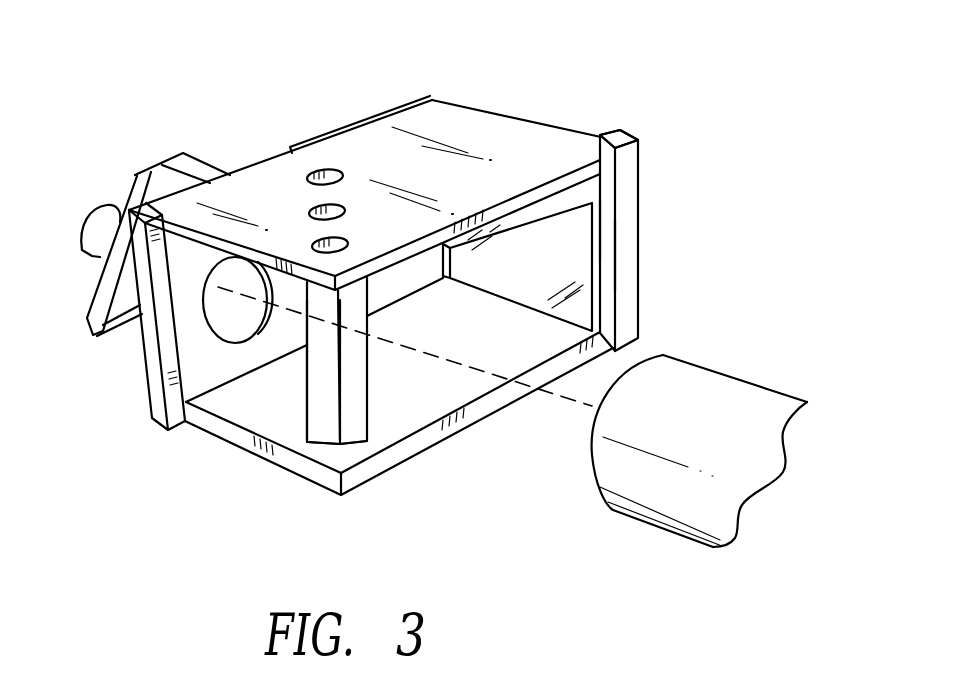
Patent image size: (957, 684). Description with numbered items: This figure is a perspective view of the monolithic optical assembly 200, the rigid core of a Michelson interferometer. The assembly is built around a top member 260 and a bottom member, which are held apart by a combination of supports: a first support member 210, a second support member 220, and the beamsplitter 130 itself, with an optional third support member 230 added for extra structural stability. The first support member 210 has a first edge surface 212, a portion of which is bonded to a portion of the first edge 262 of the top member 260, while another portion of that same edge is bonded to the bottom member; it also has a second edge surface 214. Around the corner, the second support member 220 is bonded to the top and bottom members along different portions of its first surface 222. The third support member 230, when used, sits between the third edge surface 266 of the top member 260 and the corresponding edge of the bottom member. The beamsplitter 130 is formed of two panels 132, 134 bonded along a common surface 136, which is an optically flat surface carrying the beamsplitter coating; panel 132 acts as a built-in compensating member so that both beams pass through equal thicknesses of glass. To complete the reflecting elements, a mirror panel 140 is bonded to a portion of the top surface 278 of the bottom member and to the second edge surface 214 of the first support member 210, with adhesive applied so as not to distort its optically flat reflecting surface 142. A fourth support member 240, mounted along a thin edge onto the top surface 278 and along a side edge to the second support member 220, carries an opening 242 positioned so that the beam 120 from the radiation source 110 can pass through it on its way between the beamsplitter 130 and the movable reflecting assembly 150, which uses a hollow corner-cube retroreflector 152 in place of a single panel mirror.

The radiation source 110 is at (770, 390).
The beam 120 is at (560, 396).
The beamsplitter 130 is at (352, 420).
The panel 132 is at (353, 403).
The panel 134 is at (321, 423).
The common surface 136 is at (335, 431).
The mirror panel 140 is at (602, 230).
The reflecting surface 142 is at (561, 273).
The movable reflecting assembly 150 is at (187, 149).
The hollow corner-cube retroreflector 152 is at (147, 177).
The monolithic optical assembly 200 is at (436, 96).
The first support member 210 is at (640, 187).
The first edge surface 212 is at (608, 253).
The second edge surface 214 is at (602, 128).
The second support member 220 is at (336, 127).
The first surface 222 is at (398, 279).
The third support member 230 is at (150, 368).
The fourth support member 240 is at (212, 392).
The opening 242 is at (226, 320).
The top member 260 is at (470, 131).
The first edge 262 is at (516, 115).
The third edge surface 266 is at (191, 234).
The top surface 278 is at (437, 403).